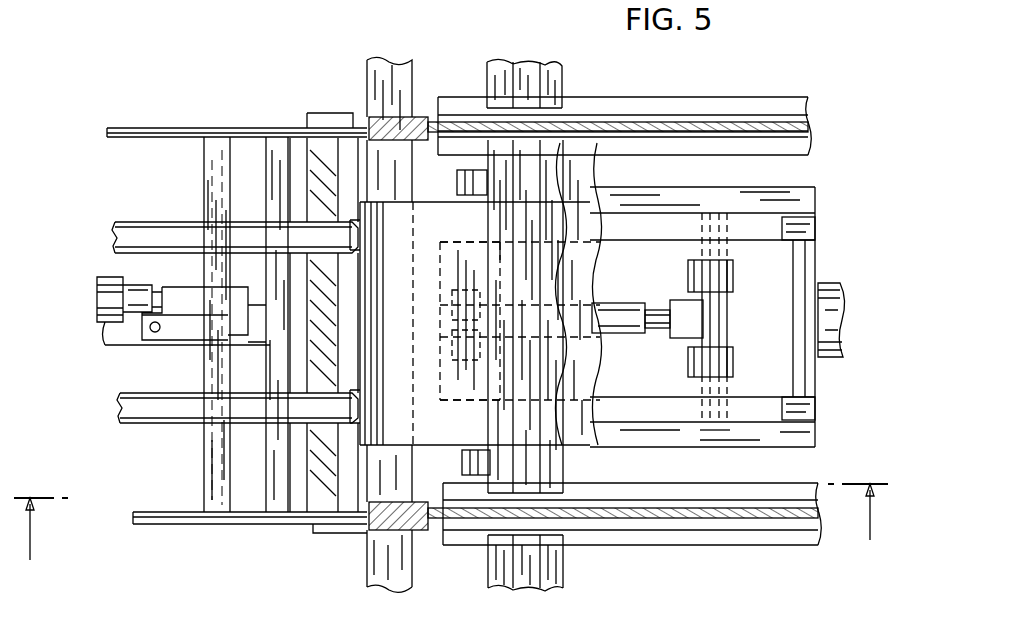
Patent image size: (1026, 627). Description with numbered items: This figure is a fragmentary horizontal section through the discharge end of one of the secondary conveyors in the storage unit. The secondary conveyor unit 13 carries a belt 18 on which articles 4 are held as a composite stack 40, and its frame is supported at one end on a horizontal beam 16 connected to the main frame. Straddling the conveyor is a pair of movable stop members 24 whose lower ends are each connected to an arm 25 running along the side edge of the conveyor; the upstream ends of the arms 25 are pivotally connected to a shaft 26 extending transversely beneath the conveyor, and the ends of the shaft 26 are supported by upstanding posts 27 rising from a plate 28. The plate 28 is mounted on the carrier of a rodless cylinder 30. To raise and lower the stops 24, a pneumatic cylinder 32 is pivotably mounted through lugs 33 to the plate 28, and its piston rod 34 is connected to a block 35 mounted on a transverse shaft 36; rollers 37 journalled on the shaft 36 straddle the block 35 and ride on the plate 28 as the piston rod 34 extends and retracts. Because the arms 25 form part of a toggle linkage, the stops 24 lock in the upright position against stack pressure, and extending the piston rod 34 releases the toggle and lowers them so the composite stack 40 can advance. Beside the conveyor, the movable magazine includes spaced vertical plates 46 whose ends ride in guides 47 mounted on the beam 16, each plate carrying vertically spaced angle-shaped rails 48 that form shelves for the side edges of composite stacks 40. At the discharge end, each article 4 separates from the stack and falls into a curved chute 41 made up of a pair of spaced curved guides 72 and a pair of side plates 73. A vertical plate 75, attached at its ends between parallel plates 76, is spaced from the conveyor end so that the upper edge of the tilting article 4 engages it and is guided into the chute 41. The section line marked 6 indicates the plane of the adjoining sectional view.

The article 4 is at (530, 58).
The section line 6- 6 is at (451, 508).
The secondary conveyor unit 13 is at (352, 314).
The horizontal beam 16 is at (372, 72).
The belt 18 is at (366, 275).
The stop member 24 is at (462, 460).
The arm 25 is at (664, 190).
The shaft 26 is at (800, 265).
The upstanding post 27 is at (812, 228).
The plate 28 is at (790, 398).
The rodless cylinder 30 is at (836, 308).
The pneumatic cylinder 32 is at (606, 333).
The lug 33 is at (440, 340).
The piston rod 34 is at (657, 300).
The block 35 is at (730, 312).
The transverse shaft 36 is at (722, 450).
The roller 37 is at (735, 278).
The composite stack 40 is at (560, 137).
The curved chute 41 is at (250, 534).
The vertical plate 46 is at (745, 124).
The guide 47 is at (376, 120).
The angle-shaped rail 48 is at (683, 100).
The curved guide 72 is at (168, 236).
The side plate 73 is at (160, 142).
The vertical plate 75 is at (275, 137).
The parallel plate 76 is at (152, 128).